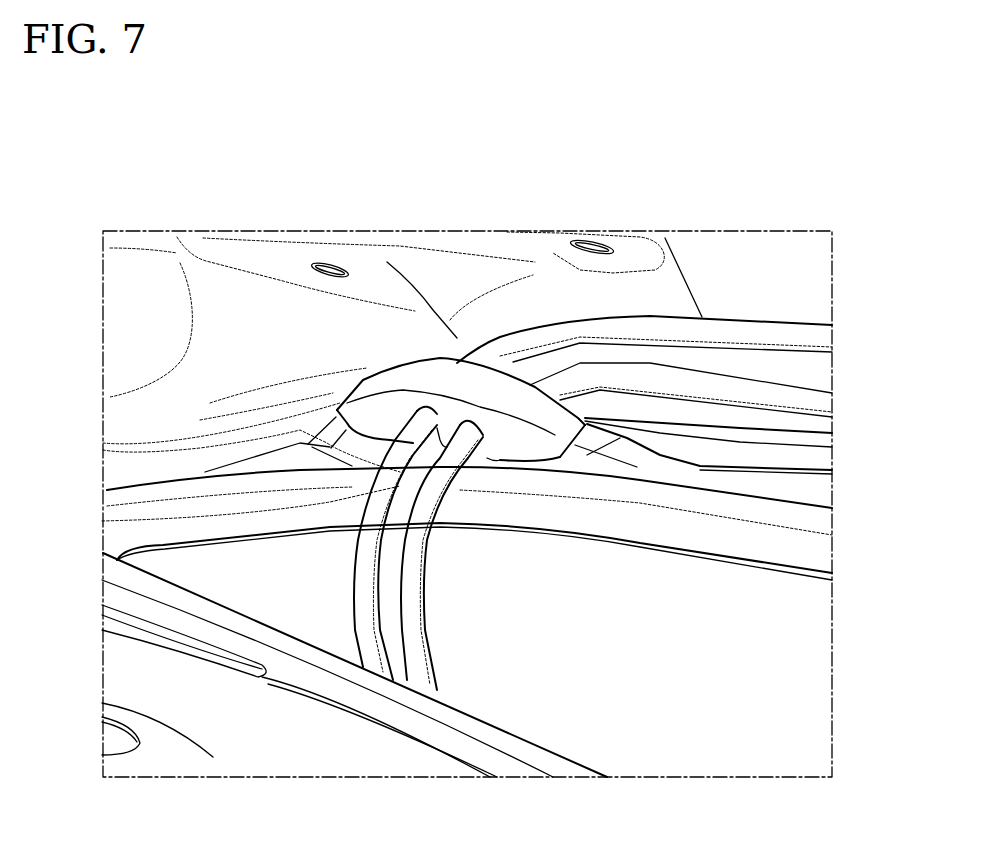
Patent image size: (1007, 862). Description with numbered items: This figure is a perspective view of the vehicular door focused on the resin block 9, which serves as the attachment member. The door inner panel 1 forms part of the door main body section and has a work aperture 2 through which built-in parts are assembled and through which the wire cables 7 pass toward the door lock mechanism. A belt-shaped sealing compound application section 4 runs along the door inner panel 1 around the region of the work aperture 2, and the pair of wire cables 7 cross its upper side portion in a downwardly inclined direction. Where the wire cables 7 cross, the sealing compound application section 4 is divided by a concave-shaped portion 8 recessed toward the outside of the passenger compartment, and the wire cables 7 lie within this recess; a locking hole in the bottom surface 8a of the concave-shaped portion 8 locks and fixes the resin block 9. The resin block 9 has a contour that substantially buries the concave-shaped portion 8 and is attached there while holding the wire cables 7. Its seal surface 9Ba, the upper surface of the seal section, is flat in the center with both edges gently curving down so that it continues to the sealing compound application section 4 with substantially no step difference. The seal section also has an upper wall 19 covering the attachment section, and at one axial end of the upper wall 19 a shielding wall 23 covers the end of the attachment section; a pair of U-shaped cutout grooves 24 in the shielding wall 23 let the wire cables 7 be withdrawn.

The door inner panel 1 is at (667, 251).
The work aperture 2 is at (773, 568).
The sealing compound application section 4 is at (570, 443).
The wire cables 7 is at (798, 397).
The concave-shaped portion 8 is at (350, 420).
The bottom surface 8a is at (500, 457).
The resin block 9 is at (457, 353).
The seal surface 9Ba is at (430, 377).
The upper wall 19 is at (367, 383).
The shielding wall 23 is at (520, 452).
The U-shaped cutout grooves 24 is at (102, 521).